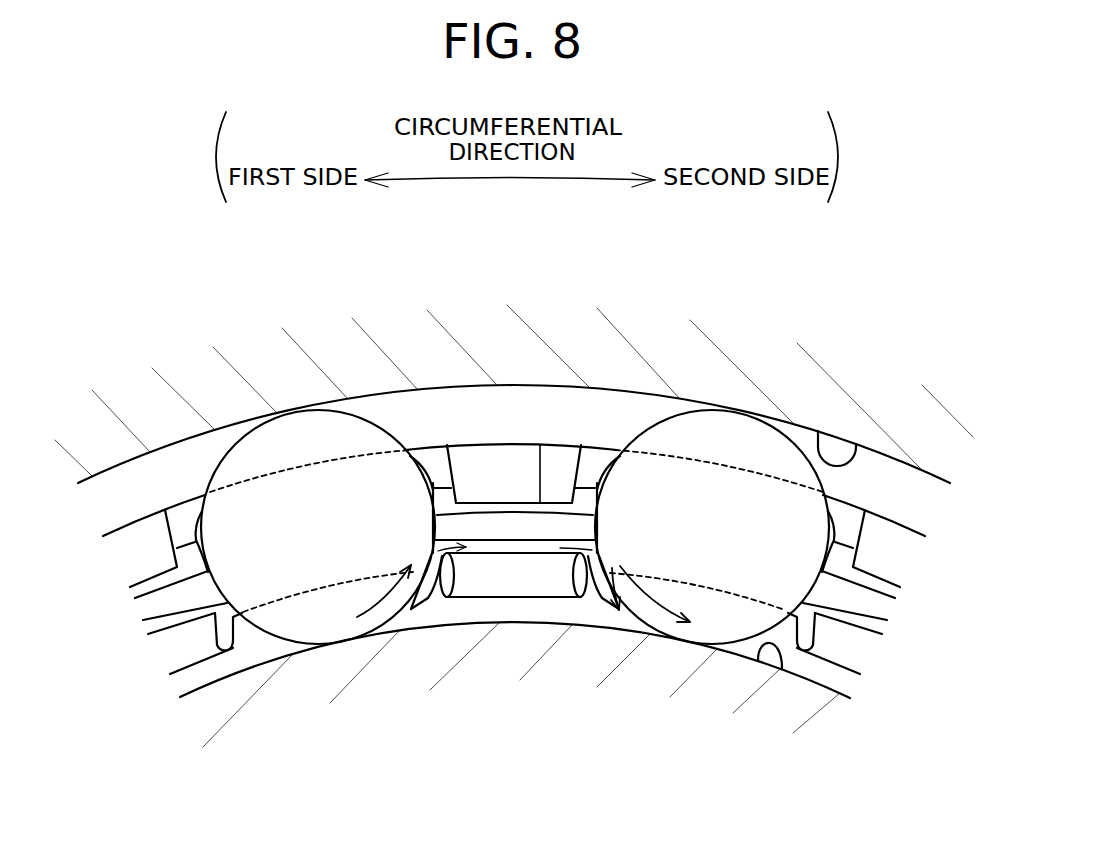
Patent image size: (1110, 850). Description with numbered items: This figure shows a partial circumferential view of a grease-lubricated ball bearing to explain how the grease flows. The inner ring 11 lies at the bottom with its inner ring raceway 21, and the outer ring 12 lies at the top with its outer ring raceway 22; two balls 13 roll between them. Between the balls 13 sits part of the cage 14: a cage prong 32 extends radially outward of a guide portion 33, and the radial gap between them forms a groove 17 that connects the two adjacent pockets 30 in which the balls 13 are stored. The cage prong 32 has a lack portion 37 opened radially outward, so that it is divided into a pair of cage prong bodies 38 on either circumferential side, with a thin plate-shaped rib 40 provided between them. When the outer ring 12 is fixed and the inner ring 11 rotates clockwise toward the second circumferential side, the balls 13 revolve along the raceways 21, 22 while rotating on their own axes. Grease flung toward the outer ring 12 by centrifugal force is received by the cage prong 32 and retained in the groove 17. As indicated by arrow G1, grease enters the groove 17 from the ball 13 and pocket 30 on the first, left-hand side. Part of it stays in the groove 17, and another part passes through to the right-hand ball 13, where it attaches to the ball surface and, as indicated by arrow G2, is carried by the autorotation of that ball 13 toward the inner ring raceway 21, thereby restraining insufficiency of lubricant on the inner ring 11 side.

The inner ring 11 is at (392, 665).
The outer ring 12 is at (127, 398).
The ball 13 is at (293, 450).
The cage 14 is at (890, 519).
The groove 17 is at (503, 525).
The inner ring raceway 21 is at (781, 668).
The outer ring raceway 22 is at (856, 443).
The pocket 30 is at (245, 634).
The cage prong 32 is at (480, 445).
The guide portion 33 is at (510, 583).
The lack portion 37 is at (525, 462).
The cage prong body 38 is at (425, 462).
The rib 40 is at (541, 445).
The arrow G1 is at (432, 556).
The arrow G2 is at (598, 556).